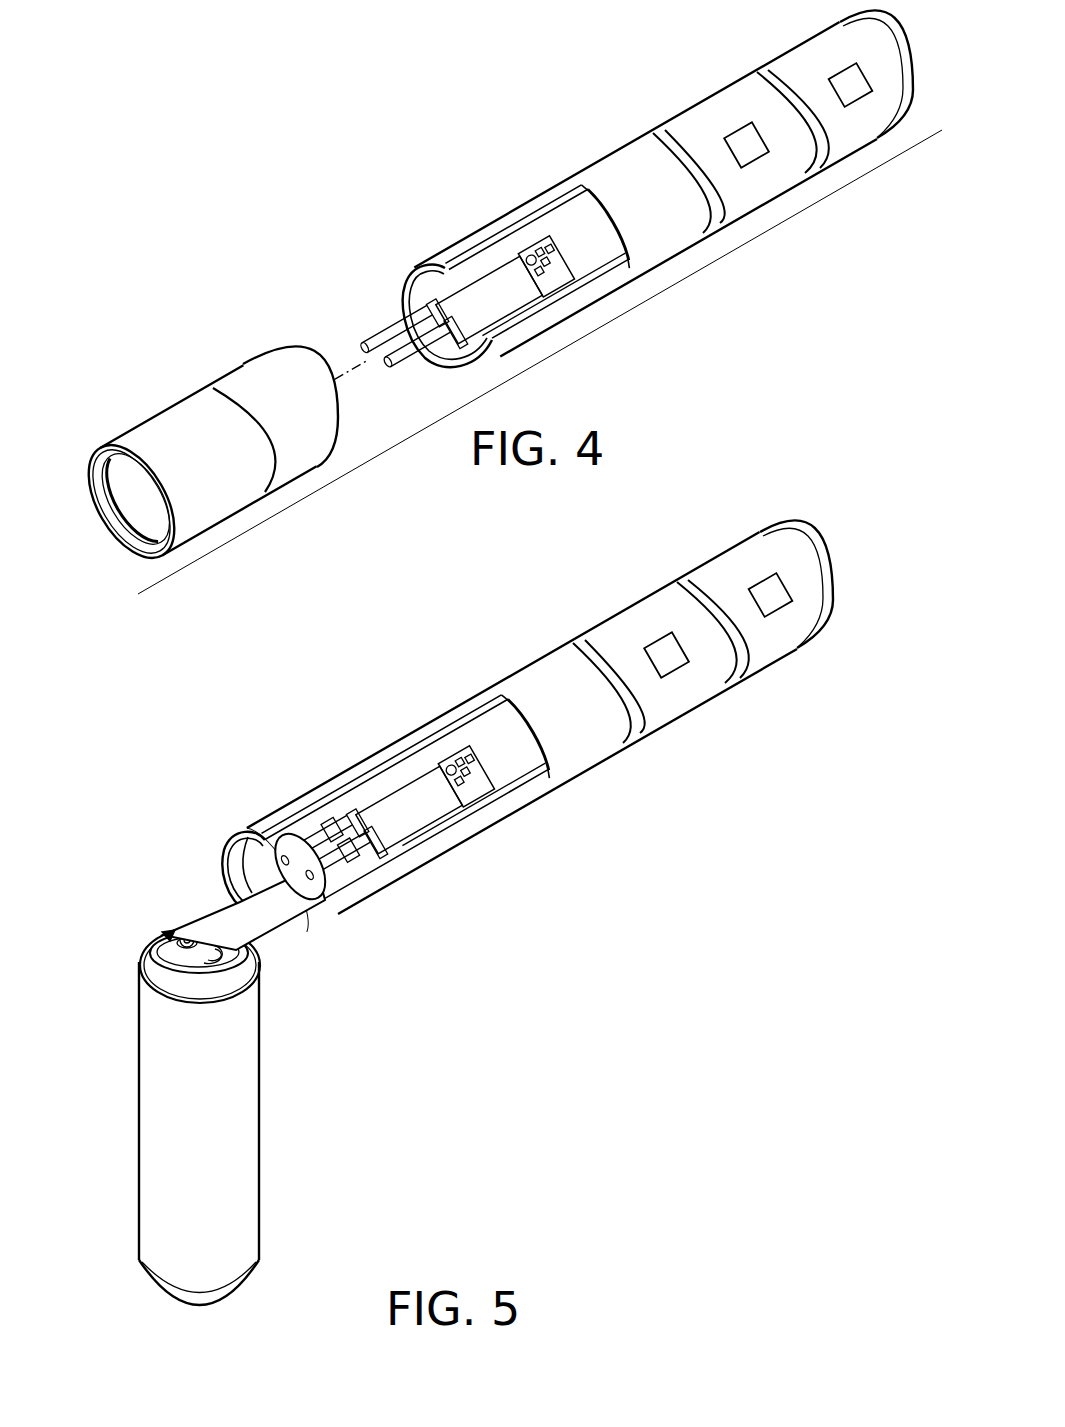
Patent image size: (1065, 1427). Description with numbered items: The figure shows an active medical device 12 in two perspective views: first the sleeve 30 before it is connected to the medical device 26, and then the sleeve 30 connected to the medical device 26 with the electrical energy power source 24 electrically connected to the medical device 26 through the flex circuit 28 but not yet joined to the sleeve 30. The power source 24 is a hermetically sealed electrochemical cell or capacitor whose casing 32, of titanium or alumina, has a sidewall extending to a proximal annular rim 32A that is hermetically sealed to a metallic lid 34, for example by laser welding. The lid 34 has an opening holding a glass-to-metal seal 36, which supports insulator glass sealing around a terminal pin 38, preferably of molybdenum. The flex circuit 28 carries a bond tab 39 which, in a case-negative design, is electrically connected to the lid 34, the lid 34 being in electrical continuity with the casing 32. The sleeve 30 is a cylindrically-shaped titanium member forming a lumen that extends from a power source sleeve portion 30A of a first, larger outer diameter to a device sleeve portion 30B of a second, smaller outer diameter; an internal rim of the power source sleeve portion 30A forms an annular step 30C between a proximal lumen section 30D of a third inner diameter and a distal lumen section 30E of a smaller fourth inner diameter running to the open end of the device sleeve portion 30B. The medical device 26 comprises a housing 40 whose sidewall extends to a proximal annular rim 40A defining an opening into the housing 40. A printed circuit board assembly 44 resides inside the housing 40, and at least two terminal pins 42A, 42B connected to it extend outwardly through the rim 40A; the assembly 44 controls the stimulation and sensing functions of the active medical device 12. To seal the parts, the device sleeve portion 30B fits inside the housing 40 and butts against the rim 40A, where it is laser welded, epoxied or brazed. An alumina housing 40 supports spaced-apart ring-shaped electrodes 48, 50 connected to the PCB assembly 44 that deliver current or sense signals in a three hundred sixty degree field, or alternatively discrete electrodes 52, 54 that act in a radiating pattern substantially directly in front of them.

In FIG. 5, the active medical device 12 is at (486, 866).
In FIG. 5, the electrical energy power source 24 is at (214, 1090).
In FIG. 4, the medical device 26 is at (628, 310).
In FIG. 5, the medical device 26 is at (520, 742).
In FIG. 5, the flex circuit 28 is at (258, 927).
In FIG. 4, the sleeve 30 is at (216, 483).
In FIG. 5, the sleeve 30 is at (275, 879).
In FIG. 4, the power source sleeve portion 30A is at (210, 508).
In FIG. 4, the device sleeve portion 30B is at (290, 450).
In FIG. 4, the annular step 30C is at (118, 503).
In FIG. 4, the proximal lumen section 30D is at (133, 538).
In FIG. 5, the proximal lumen section 30D is at (245, 880).
In FIG. 4, the distal lumen section 30E is at (128, 472).
In FIG. 5, the casing 32 is at (167, 1148).
In FIG. 5, the proximal annular rim 32A is at (147, 987).
In FIG. 5, the metallic lid 34 is at (193, 992).
In FIG. 5, the glass-to-metal seal 36 is at (165, 932).
In FIG. 5, the terminal pin 38 is at (187, 935).
In FIG. 5, the bond tab 39 is at (213, 948).
In FIG. 4, the housing 40 is at (782, 177).
In FIG. 5, the housing 40 is at (702, 687).
In FIG. 4, the proximal annular rim 40A is at (412, 268).
In FIG. 5, the proximal annular rim 40A is at (363, 773).
In FIG. 4, the terminal pin 42A is at (415, 350).
In FIG. 5, the terminal pin 42A is at (275, 853).
In FIG. 4, the terminal pin 42B is at (390, 333).
In FIG. 5, the terminal pin 42B is at (311, 878).
In FIG. 4, the printed circuit board assembly 44 is at (543, 222).
In FIG. 5, the printed circuit board assembly 44 is at (463, 732).
In FIG. 4, the ring-shaped electrode 48 is at (772, 77).
In FIG. 5, the ring-shaped electrode 48 is at (692, 587).
In FIG. 4, the ring-shaped electrode 50 is at (658, 137).
In FIG. 5, the ring-shaped electrode 50 is at (578, 647).
In FIG. 4, the discrete electrode 52 is at (857, 93).
In FIG. 5, the discrete electrode 52 is at (777, 603).
In FIG. 4, the discrete electrode 54 is at (743, 160).
In FIG. 5, the discrete electrode 54 is at (663, 670).